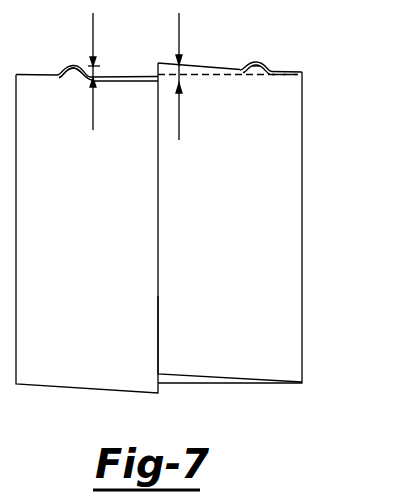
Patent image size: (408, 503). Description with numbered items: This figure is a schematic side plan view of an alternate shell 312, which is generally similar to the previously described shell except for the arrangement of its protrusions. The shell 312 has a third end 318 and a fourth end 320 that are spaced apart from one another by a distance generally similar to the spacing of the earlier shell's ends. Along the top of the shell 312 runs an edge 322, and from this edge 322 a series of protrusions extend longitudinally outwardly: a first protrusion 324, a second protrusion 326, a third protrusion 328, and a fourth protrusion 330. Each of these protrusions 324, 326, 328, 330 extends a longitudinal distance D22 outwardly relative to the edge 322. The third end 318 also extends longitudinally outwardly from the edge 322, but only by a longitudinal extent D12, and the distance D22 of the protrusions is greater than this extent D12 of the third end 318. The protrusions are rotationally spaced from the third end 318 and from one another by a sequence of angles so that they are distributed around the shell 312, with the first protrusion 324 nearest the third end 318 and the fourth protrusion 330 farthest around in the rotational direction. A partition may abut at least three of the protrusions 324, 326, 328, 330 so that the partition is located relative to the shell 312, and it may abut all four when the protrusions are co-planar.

The alternate shell 312 is at (207, 205).
The third end 318 is at (159, 298).
The fourth end 320 is at (159, 252).
The edge 322 is at (283, 70).
The first protrusion 324 is at (254, 62).
The second protrusion 326 is at (257, 67).
The third protrusion 328 is at (74, 64).
The fourth protrusion 330 is at (74, 74).
The longitudinal distance D22 is at (100, 65).
The longitudinal extent D12 is at (173, 82).